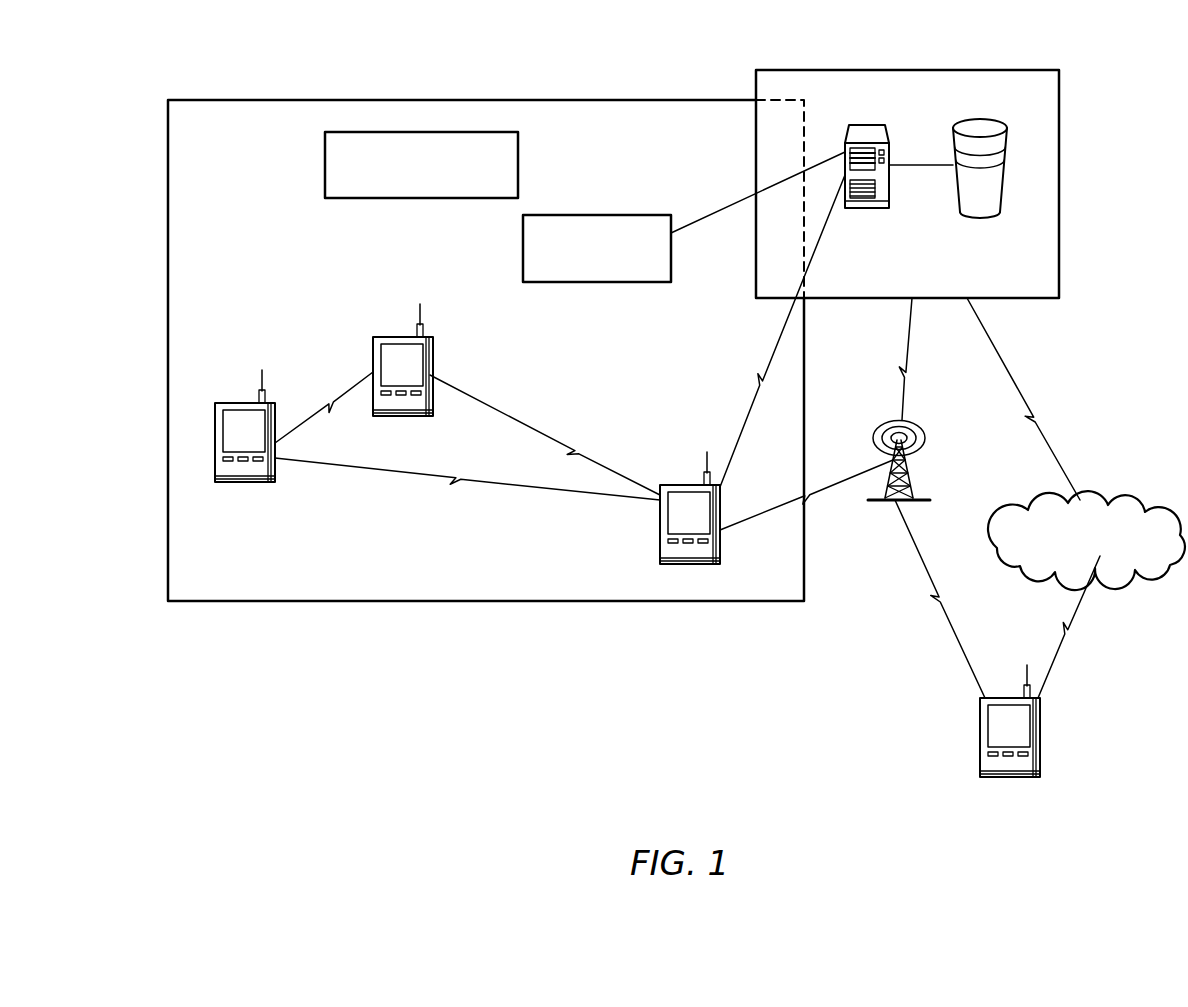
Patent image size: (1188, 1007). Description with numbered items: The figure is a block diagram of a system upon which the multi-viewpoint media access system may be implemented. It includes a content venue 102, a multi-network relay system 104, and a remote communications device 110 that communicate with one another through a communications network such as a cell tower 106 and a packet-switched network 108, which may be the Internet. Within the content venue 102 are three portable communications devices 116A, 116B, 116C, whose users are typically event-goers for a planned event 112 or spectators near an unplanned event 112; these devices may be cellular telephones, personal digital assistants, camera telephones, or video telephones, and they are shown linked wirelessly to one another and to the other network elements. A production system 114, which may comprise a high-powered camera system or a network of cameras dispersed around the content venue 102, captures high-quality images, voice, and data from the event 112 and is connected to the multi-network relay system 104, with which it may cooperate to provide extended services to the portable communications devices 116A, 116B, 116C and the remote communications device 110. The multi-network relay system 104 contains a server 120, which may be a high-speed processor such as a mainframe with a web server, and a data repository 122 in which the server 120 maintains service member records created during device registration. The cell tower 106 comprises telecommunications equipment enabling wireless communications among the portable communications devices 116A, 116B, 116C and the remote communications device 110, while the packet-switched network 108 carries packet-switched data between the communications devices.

The content venue 102 is at (462, 100).
The multi-network relay system 104 is at (1018, 70).
The cell tower 106 is at (915, 427).
The packet-switched network 108 is at (1128, 505).
The remote communications device 110 is at (1040, 725).
The event 112 is at (519, 151).
The production system 114 is at (642, 215).
The portable communications device 116A is at (236, 403).
The portable communications device 116B is at (433, 357).
The portable communications device 116C is at (683, 485).
The server 120 is at (868, 125).
The data repository 122 is at (1000, 120).